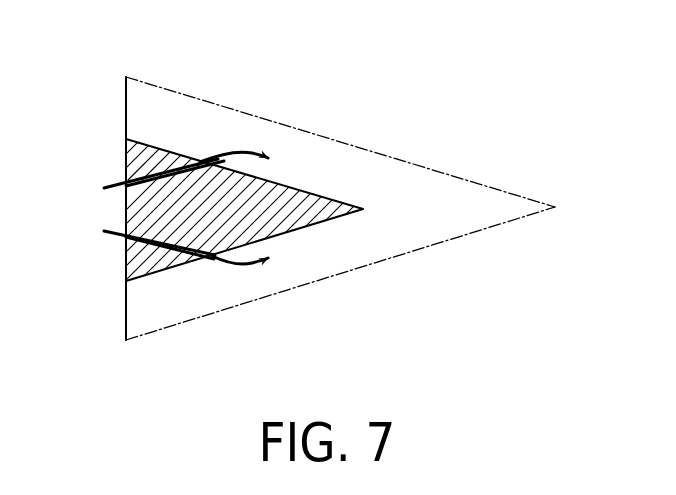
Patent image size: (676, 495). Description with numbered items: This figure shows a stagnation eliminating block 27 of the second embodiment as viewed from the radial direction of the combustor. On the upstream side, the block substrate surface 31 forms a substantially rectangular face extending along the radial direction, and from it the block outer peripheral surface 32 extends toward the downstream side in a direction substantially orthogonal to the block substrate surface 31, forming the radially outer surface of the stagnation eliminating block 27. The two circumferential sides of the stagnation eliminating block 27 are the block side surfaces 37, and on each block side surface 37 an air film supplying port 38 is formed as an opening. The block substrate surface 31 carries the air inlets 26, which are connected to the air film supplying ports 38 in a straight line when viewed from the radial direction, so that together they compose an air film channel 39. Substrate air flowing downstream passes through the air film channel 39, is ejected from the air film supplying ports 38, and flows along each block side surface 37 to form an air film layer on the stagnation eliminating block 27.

The air inlet 26 is at (132, 230).
The stagnation eliminating block 27 is at (476, 246).
The block substrate surface 31 is at (125, 153).
The block outer peripheral surface 32 is at (430, 170).
The block side surface 37 is at (172, 160).
The air film supplying port 38 is at (200, 158).
The air film channel 39 is at (164, 168).